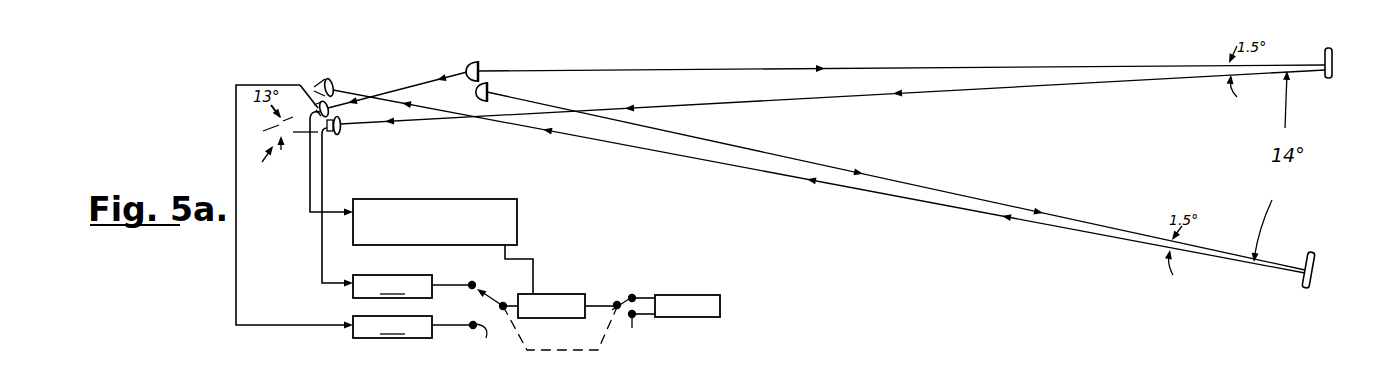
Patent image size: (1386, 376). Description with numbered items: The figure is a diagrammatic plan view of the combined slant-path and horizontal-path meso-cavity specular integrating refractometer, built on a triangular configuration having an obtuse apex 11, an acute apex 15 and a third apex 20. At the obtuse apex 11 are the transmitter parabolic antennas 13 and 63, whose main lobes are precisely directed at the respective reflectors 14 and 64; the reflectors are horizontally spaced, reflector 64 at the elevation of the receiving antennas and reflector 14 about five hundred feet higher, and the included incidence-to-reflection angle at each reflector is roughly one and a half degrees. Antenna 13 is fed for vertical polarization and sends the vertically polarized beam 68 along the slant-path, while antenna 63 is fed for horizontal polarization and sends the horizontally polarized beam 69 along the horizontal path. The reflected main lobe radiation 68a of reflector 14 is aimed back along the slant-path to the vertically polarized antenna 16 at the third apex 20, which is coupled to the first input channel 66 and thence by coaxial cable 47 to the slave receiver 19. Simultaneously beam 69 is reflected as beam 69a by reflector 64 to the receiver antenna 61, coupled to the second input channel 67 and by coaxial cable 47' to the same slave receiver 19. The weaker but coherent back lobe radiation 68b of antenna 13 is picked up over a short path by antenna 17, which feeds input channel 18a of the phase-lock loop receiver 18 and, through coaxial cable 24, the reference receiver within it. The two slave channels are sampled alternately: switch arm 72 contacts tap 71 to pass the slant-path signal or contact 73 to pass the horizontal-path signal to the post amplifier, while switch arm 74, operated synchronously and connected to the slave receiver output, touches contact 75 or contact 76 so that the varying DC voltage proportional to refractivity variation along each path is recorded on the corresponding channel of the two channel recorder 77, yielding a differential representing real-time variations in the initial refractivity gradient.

The obtuse apex 11 is at (484, 61).
The transmitter parabolic antenna 13 is at (484, 67).
The reflector 14 is at (1333, 70).
The acute apex 15 is at (1318, 73).
The vertically polarized antenna 16 is at (331, 132).
The antenna 17 is at (300, 84).
The phase-lock loop receiver 18 is at (440, 203).
The input channel 18a is at (302, 145).
The slave receiver 19 is at (551, 294).
The third apex 20 is at (264, 164).
The coaxial cable 24 is at (310, 196).
The coaxial cable 47 is at (452, 271).
The coaxial cable 47' is at (452, 337).
The receiver antenna 61 is at (333, 84).
The transmitter parabolic antenna 63 is at (490, 89).
The reflector 64 is at (1301, 281).
The first input channel 66 is at (392, 286).
The second input channel 67 is at (392, 327).
The vertically polarized beam 68 is at (877, 67).
The reflected main lobe radiation 68a is at (913, 95).
The back lobe radiation 68b is at (420, 83).
The horizontally polarized beam 69 is at (903, 186).
The reflected beam 69a is at (873, 193).
The tap 71 is at (483, 276).
The switch arm 72 is at (495, 297).
The contact 73 is at (488, 342).
The switch arm 74 is at (615, 301).
The contact 75 is at (636, 295).
The contact 76 is at (559, 350).
The two channel recorder 77 is at (694, 318).